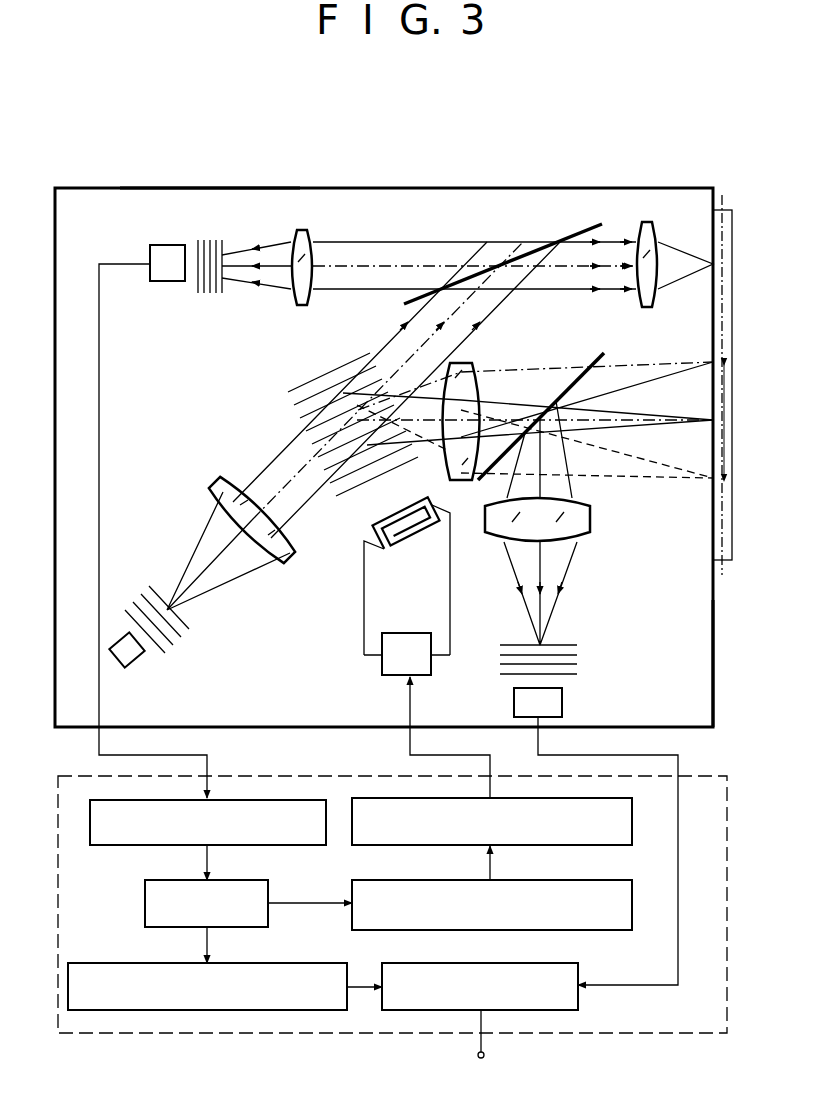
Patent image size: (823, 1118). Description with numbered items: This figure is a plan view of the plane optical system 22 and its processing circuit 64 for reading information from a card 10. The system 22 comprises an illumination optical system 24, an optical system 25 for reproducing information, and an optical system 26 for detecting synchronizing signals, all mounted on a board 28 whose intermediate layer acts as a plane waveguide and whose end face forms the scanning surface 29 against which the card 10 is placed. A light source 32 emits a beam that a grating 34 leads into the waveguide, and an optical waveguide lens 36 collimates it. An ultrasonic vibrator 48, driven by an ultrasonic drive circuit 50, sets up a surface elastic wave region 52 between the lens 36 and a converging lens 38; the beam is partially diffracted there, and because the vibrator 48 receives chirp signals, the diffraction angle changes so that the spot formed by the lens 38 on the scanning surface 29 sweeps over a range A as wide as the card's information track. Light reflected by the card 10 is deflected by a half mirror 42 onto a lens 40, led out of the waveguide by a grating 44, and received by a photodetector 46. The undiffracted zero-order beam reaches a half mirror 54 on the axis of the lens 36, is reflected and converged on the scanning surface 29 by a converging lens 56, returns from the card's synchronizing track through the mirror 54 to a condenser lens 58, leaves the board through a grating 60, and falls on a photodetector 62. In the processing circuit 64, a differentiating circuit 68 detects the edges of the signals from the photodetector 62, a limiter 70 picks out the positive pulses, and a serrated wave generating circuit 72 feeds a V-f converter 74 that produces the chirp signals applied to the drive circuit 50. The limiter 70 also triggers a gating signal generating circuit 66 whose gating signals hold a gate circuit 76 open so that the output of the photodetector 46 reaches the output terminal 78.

The card 10 is at (724, 205).
The system 22 is at (66, 186).
The illumination optical system 24 is at (253, 466).
The optical system for reproducing information 25 is at (636, 627).
The optical system for detecting synchronizing signals 26 is at (278, 302).
The board 28 is at (178, 188).
The scanning surface 29 is at (713, 652).
The light source 32 is at (140, 663).
The grating 34 is at (180, 645).
The optical waveguide lens 36 is at (292, 560).
The lens 38 is at (462, 366).
The lens 40 is at (590, 520).
The half mirror 42 is at (590, 358).
The grating 44 is at (577, 648).
The photodetector 46 is at (562, 702).
The ultrasonic vibrator 48 is at (412, 548).
The ultrasonic drive circuit 50 is at (382, 678).
The surface elastic wave region 52 is at (284, 406).
The half mirror 54 is at (578, 236).
The converging lens 56 is at (652, 232).
The condenser lens 58 is at (306, 232).
The grating 60 is at (214, 240).
The photodetector 62 is at (168, 245).
The processing circuit 64 is at (128, 1033).
The gating signal generating circuit 66 is at (280, 963).
The differentiating circuit 68 is at (126, 847).
The limiter 70 is at (268, 890).
The serrated wave generating circuit 72 is at (632, 884).
The V-f converter 74 is at (632, 822).
The gate circuit 76 is at (578, 968).
The output terminal 78 is at (493, 1053).
The range A is at (731, 420).